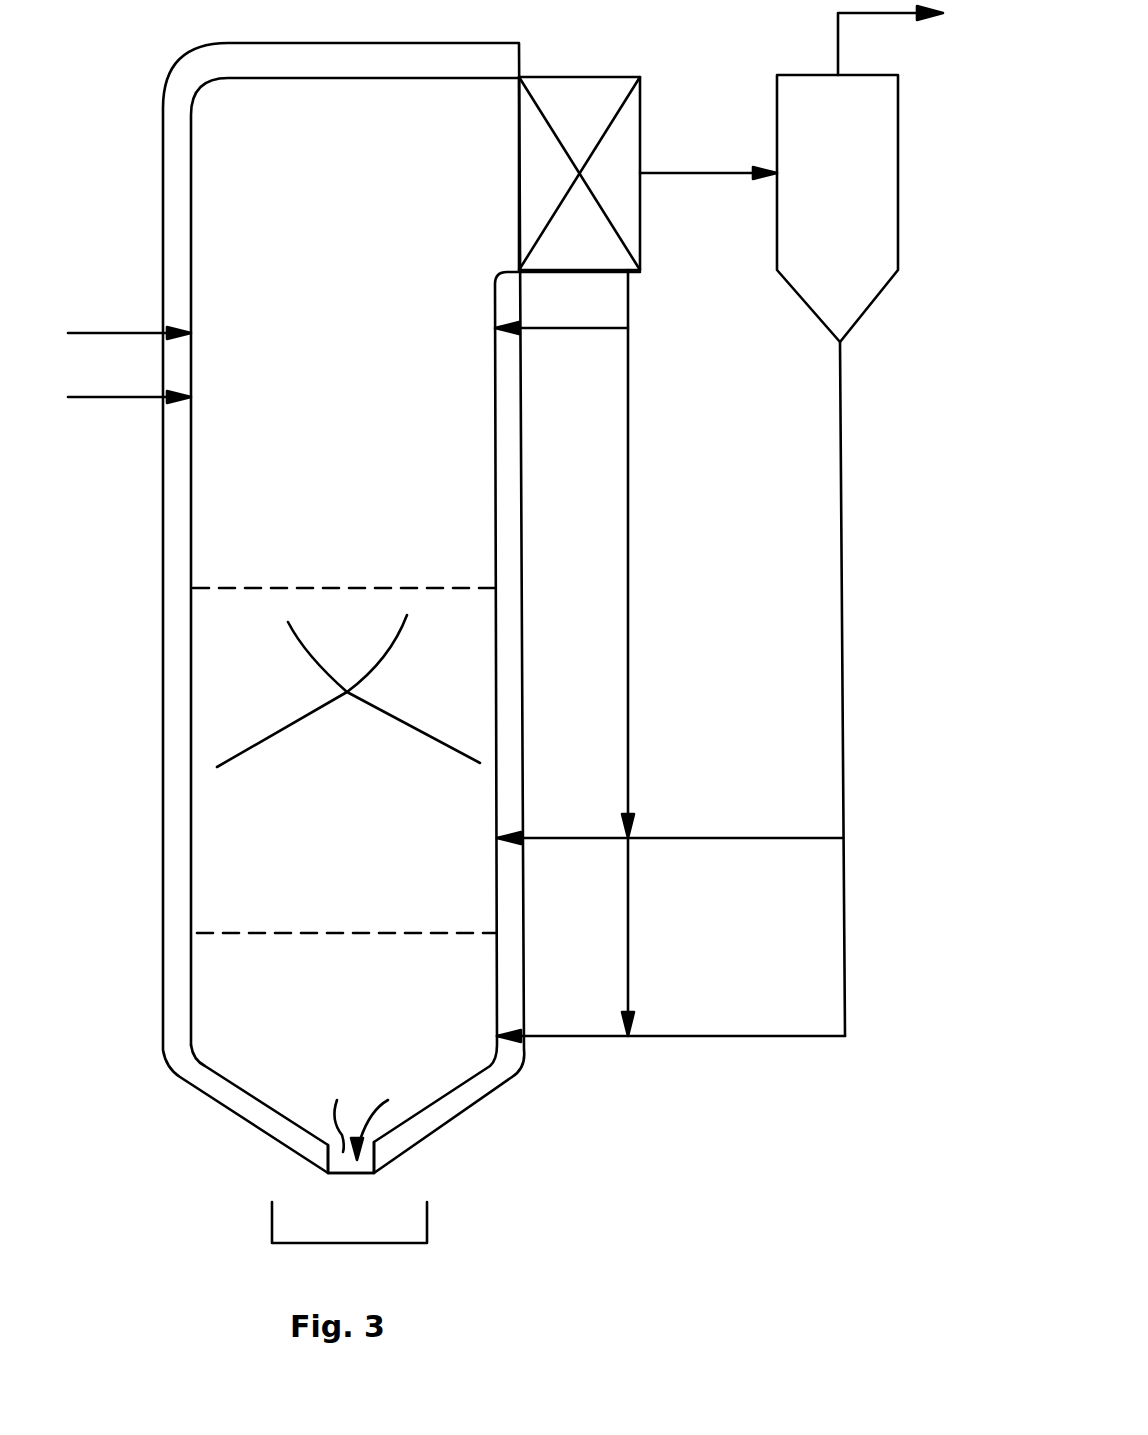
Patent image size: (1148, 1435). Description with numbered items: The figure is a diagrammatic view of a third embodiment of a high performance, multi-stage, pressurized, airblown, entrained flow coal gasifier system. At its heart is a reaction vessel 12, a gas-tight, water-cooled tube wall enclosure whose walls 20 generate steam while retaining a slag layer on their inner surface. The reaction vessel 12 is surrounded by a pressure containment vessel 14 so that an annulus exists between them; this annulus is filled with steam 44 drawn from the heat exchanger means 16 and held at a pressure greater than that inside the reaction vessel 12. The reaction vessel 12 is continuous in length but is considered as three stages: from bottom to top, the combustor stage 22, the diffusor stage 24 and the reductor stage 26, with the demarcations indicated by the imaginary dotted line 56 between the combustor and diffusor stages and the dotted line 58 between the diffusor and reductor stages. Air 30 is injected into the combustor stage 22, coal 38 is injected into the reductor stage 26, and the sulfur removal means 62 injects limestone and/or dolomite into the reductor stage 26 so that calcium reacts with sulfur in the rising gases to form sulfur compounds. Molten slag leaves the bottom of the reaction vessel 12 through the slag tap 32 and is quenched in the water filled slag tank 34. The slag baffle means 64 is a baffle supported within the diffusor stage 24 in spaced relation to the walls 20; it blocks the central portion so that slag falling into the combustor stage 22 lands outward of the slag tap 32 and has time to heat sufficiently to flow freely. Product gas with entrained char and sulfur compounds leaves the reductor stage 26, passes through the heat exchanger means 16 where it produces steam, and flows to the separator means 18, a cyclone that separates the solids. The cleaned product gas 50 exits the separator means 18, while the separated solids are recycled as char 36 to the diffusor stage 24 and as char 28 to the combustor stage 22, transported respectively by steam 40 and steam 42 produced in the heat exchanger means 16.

The reaction vessel 12 is at (214, 538).
The pressure containment vessel 14 is at (145, 511).
The heat exchanger means 16 is at (608, 60).
The separator means 18 is at (757, 229).
The walls 20 is at (196, 431).
The combustor stage 22 is at (365, 1017).
The diffusor stage 24 is at (362, 843).
The reductor stage 26 is at (360, 505).
The char 28 is at (505, 1030).
The air 30 is at (155, 990).
The slag tap 32 is at (355, 1120).
The slag tank 34 is at (430, 1225).
The char 36 is at (505, 832).
The coal 38 is at (125, 420).
The steam 40 is at (632, 688).
The steam 42 is at (632, 915).
The steam 44 is at (560, 335).
The product gas 50 is at (838, 34).
The dotted line 56 is at (290, 932).
The dotted line 58 is at (340, 586).
The sulfur removal means 62 is at (126, 312).
The slag baffle means 64 is at (285, 700).